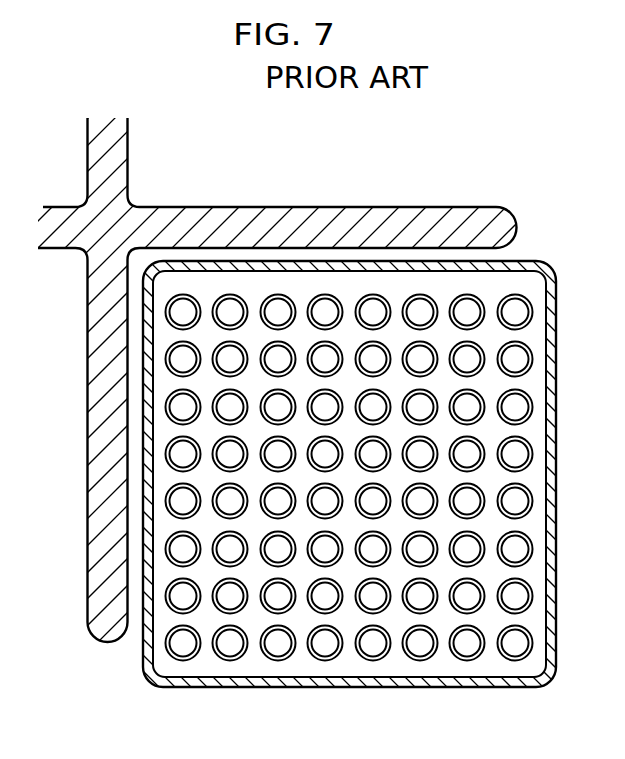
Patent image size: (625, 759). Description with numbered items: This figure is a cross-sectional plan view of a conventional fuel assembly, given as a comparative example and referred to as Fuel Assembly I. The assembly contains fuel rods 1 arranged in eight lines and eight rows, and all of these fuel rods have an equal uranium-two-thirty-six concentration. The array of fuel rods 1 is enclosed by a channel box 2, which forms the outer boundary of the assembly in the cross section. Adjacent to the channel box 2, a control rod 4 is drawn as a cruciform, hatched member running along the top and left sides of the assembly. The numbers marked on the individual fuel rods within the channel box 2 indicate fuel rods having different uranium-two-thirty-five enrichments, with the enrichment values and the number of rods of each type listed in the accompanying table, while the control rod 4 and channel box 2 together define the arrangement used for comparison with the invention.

The fuel rod 1 is at (185, 656).
The channel box 2 is at (292, 688).
The control rod 4 is at (112, 634).